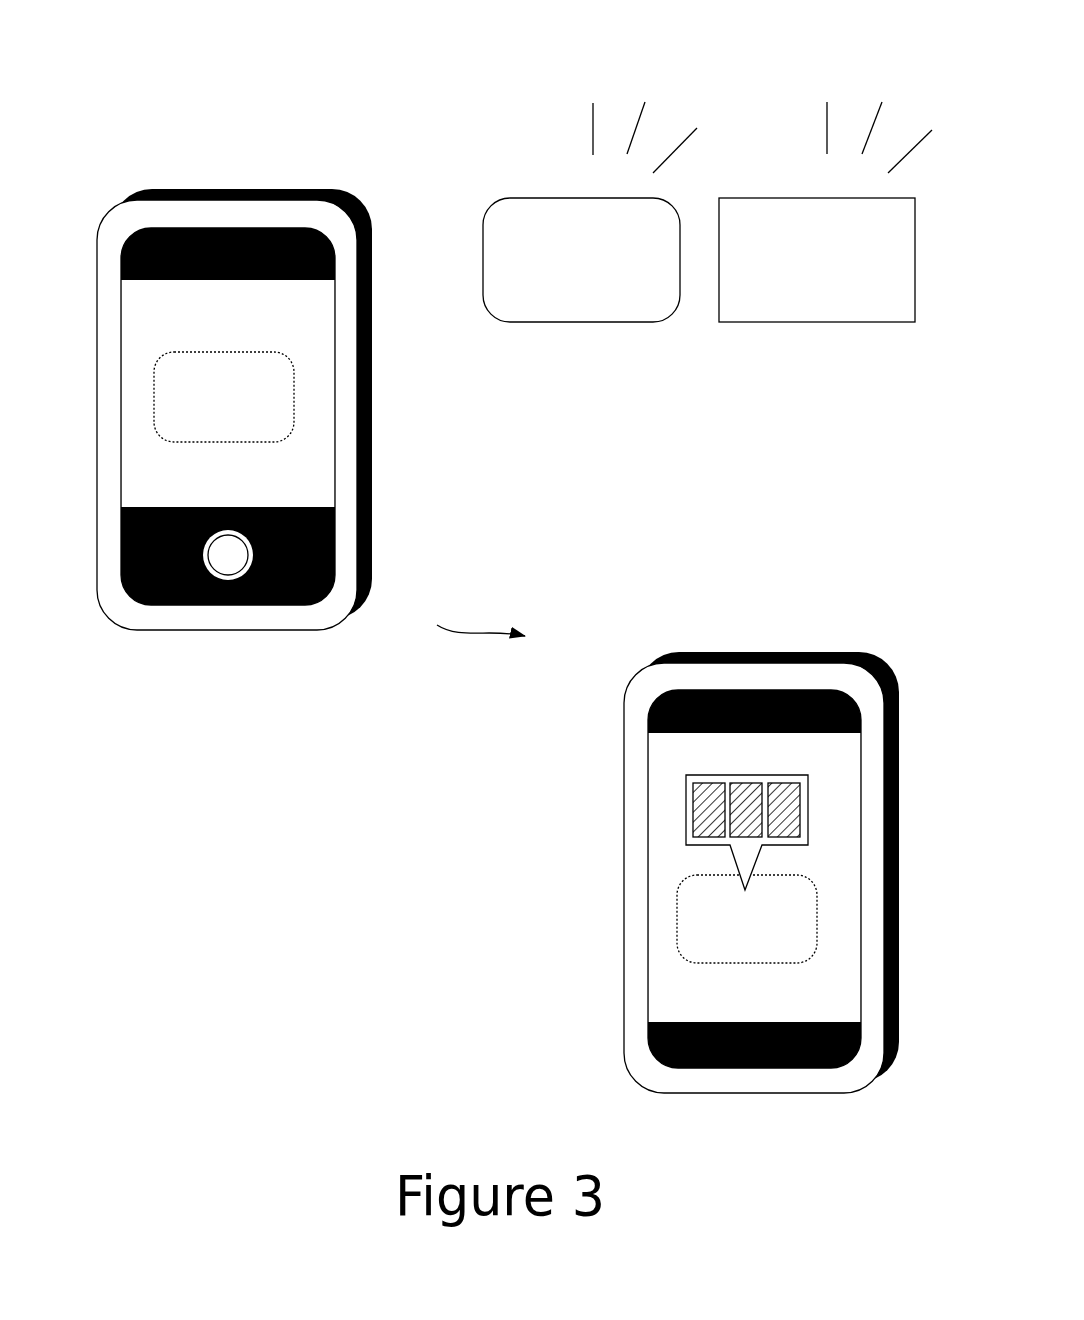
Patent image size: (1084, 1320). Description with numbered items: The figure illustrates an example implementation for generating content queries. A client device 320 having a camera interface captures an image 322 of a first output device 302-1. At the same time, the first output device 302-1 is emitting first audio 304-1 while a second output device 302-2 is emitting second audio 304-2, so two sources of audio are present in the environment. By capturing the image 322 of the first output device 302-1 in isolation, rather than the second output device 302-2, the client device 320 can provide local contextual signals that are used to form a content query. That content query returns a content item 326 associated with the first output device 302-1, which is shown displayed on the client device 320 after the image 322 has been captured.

The client device 320 is at (208, 363).
The image 322 is at (138, 318).
The first output device 302-1 is at (581, 260).
The second output device 302-2 is at (817, 260).
The first audio 304-1 is at (578, 90).
The second audio 304-2 is at (815, 90).
The content item 326 is at (683, 772).